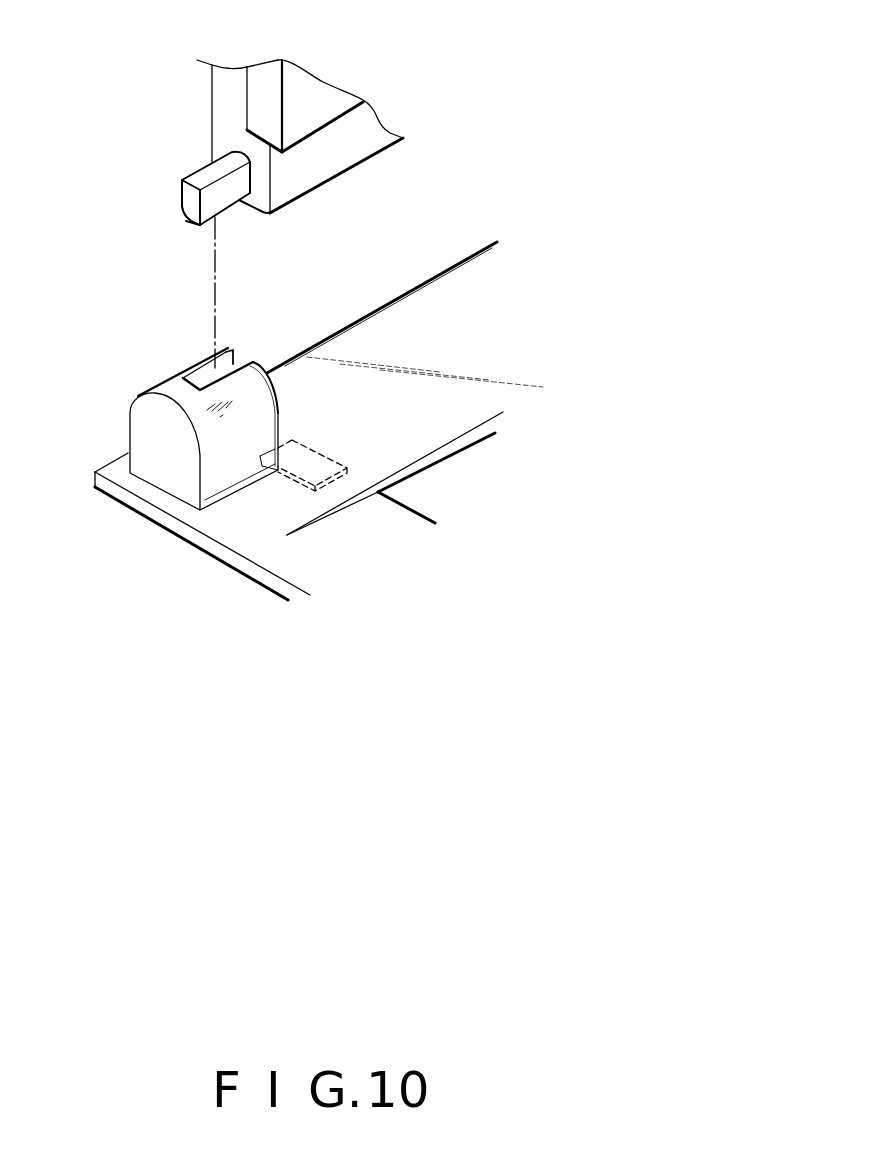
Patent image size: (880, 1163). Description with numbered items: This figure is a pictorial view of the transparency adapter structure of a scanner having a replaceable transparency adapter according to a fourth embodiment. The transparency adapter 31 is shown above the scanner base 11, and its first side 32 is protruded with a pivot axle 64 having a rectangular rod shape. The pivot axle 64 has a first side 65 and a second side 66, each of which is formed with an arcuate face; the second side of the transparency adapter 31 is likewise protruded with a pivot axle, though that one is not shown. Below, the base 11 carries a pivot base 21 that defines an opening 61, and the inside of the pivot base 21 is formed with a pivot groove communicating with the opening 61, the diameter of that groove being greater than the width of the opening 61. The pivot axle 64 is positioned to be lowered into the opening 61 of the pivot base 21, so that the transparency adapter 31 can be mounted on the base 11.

The base 11 is at (283, 568).
The pivot base 21 is at (174, 401).
The transparency adapter 31 is at (322, 100).
The first side 32 is at (220, 93).
The opening 61 is at (235, 352).
The pivot axle 64 is at (188, 198).
The first side 65 is at (172, 224).
The second side 66 is at (193, 220).